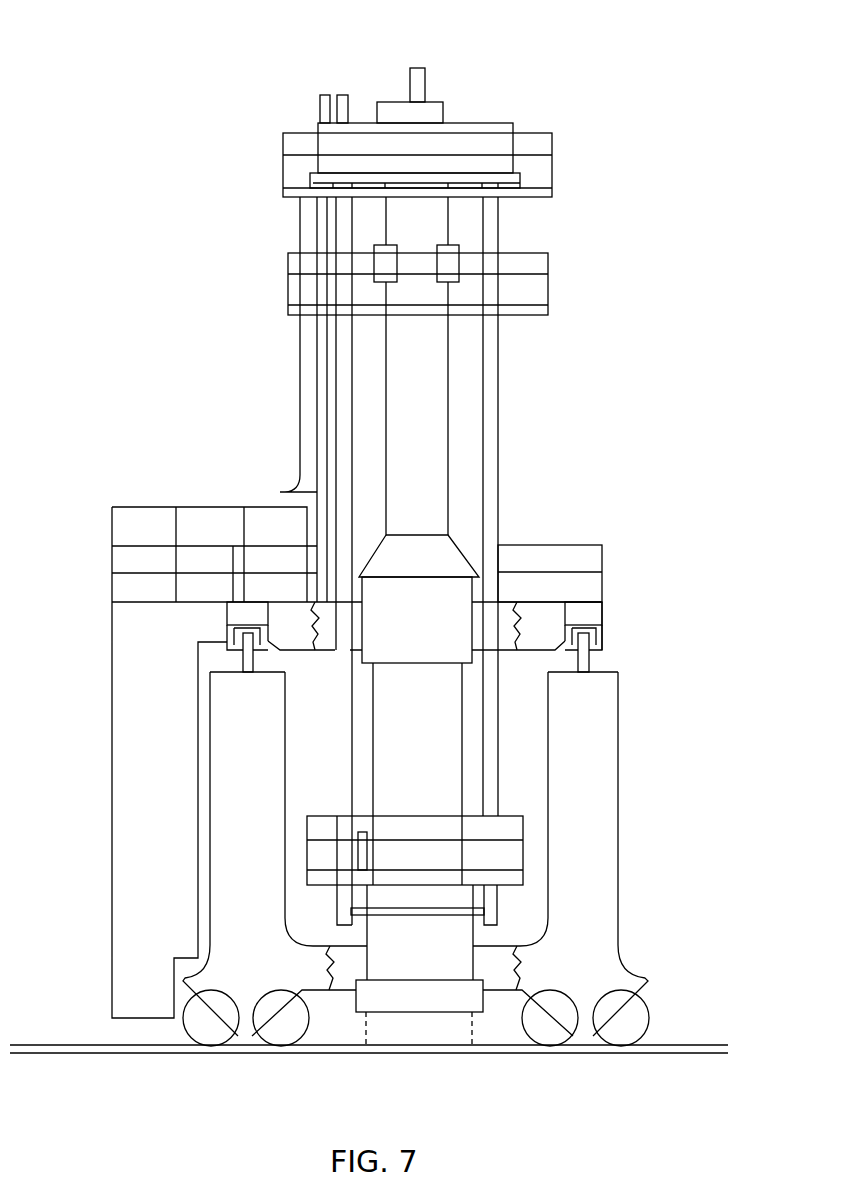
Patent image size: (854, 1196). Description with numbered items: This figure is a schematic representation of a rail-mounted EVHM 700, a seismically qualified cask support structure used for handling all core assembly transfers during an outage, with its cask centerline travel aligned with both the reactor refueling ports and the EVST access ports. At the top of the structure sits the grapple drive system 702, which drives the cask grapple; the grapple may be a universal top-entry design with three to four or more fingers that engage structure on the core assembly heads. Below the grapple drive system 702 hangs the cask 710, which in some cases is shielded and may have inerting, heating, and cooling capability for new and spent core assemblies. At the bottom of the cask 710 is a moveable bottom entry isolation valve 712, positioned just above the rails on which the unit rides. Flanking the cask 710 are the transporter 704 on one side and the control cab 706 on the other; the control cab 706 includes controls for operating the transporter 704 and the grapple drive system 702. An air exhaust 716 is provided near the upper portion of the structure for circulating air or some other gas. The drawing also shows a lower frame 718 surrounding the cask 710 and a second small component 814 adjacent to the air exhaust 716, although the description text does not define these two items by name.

The EVHM 700 is at (258, 80).
The grapple drive system 702 is at (453, 140).
The transporter 704 is at (588, 709).
The control cab 706 is at (133, 672).
The cask 710 is at (425, 474).
The moveable bottom entry isolation valve 712 is at (413, 1003).
The air exhaust 716 is at (370, 246).
The lower frame 718 is at (338, 816).
The right clamp 814 is at (462, 243).